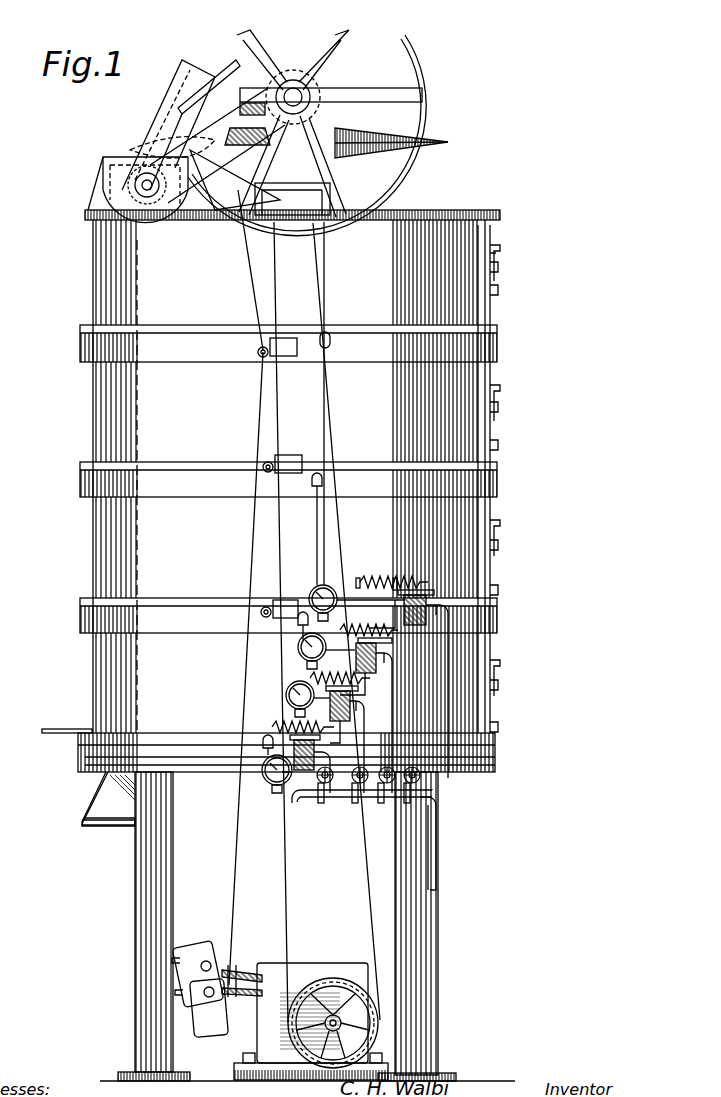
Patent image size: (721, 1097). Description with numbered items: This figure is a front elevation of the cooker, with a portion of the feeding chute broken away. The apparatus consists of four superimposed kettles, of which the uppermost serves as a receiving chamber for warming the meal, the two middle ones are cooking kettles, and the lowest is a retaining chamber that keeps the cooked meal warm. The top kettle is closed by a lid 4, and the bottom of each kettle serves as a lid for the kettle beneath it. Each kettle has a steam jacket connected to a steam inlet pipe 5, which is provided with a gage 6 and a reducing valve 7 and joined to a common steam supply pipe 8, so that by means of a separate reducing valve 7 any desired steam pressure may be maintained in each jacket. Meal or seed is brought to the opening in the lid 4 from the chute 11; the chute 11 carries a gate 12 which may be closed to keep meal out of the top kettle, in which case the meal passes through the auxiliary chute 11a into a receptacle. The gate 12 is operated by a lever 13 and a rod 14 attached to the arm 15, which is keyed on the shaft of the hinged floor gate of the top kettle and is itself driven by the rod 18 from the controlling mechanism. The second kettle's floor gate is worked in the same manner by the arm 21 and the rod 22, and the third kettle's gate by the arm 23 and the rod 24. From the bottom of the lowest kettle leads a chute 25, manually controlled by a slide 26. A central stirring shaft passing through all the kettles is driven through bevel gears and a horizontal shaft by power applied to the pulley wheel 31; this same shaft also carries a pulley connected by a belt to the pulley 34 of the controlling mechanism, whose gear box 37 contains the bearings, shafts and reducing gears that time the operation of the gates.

The lid 4 is at (498, 217).
The steam inlet pipe 5 is at (323, 413).
The gage 6 is at (333, 588).
The reducing valve 7 is at (388, 578).
The common steam supply pipe 8 is at (430, 846).
The chute 11 is at (150, 118).
The auxiliary chute 11a is at (247, 124).
The gate 12 is at (192, 108).
The lever 13 is at (232, 100).
The rod 14 is at (244, 256).
The arm 15 is at (260, 336).
The rod 18 is at (258, 408).
The arm 21 is at (276, 462).
The rod 22 is at (260, 523).
The arm 23 is at (264, 607).
The rod 24 is at (286, 694).
The chute 25 is at (96, 826).
The slide 26 is at (52, 737).
The pulley wheel 31 is at (418, 121).
The pulley 34 is at (290, 1024).
The gear box 37 is at (318, 970).